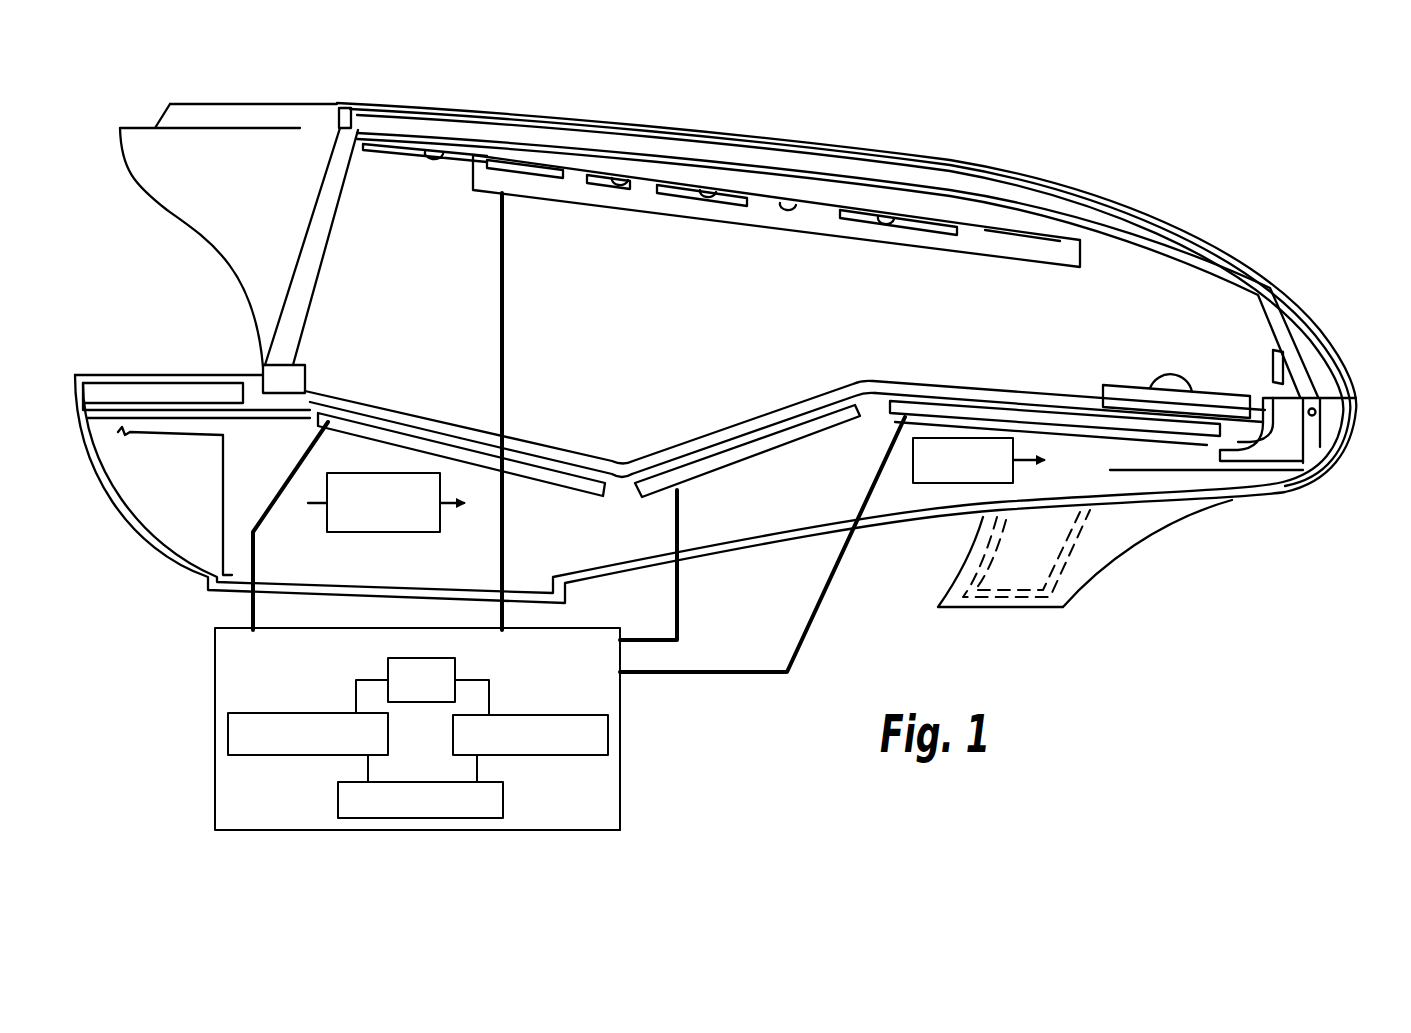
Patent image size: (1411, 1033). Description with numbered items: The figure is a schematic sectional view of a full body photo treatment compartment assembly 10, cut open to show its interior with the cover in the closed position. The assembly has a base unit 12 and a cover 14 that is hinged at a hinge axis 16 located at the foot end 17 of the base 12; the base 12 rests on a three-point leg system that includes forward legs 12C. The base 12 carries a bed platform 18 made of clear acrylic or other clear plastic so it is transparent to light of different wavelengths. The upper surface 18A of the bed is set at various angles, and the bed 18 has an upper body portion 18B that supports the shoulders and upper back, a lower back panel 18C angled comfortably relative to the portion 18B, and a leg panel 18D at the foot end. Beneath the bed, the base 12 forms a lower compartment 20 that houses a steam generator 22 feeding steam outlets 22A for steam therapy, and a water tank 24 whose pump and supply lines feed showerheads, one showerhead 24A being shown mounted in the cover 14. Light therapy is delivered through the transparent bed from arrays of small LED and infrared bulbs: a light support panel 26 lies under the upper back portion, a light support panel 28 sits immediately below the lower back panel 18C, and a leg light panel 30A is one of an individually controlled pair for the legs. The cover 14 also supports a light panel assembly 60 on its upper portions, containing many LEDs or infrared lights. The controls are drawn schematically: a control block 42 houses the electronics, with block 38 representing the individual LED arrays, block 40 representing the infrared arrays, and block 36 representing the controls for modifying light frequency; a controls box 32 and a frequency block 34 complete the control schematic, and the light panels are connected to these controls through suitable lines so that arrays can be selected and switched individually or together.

The full body photo treatment compartment assembly 10 is at (1045, 166).
The base unit 12 is at (891, 486).
The forward legs 12C is at (993, 607).
The cover 14 is at (890, 177).
The hinge axis 16 is at (1318, 412).
The foot end 17 is at (1310, 450).
The bed platform 18 is at (808, 398).
The upper surface of the bed 18A is at (518, 440).
The upper body portion 18B is at (368, 403).
The lower back panel 18C is at (740, 428).
The leg panel 18D is at (1010, 398).
The lower compartment 20 is at (720, 516).
The steam generator 22 is at (950, 438).
The steam outlets 22A is at (1170, 380).
The water tank 24 is at (348, 523).
The showerhead 24A is at (420, 150).
The light support panel 26 is at (530, 480).
The light support panel 28 is at (775, 440).
The leg light panel 30A is at (1107, 427).
The controls unit 32 is at (398, 729).
The frequency control 34 is at (303, 713).
The frequency control block 36 is at (528, 752).
The LED arrays block 38 is at (455, 672).
The infrared arrays block 40 is at (338, 796).
The control block 42 is at (602, 793).
The light panel assembly 60 is at (622, 200).